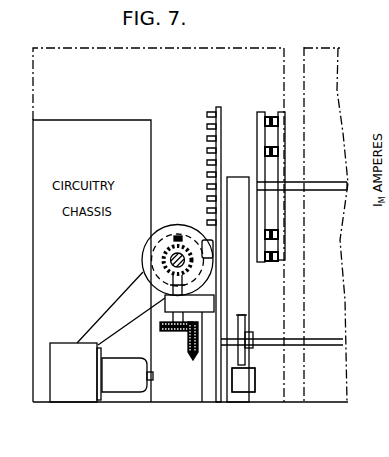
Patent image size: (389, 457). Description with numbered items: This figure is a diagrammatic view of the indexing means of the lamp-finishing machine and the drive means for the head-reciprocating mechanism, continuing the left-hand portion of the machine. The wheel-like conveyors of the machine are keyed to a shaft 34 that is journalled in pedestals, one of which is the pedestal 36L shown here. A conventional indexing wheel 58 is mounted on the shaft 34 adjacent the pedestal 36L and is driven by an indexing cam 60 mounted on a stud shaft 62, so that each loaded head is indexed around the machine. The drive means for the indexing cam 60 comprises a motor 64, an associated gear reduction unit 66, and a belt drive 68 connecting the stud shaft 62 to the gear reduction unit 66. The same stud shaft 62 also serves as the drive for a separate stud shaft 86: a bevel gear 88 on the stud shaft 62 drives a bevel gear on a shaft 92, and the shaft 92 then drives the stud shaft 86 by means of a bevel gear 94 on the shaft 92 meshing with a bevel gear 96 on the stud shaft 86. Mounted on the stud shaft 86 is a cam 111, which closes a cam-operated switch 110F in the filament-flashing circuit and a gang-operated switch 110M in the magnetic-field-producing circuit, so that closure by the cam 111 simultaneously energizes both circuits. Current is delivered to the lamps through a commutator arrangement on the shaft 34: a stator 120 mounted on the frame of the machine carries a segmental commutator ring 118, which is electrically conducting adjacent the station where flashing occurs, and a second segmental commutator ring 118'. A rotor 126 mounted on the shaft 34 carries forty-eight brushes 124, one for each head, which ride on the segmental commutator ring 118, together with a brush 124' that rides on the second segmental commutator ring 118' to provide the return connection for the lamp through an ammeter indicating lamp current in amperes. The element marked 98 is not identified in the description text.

The indexing wheel 58 is at (218, 106).
The rotor 126 is at (260, 111).
The stator 120 is at (282, 111).
The brushes 124 is at (280, 185).
The brush 124' is at (256, 204).
The segmental commutator ring 118 is at (302, 185).
The second segmental commutator ring 118' is at (306, 195).
The pedestal 36L is at (238, 180).
The shaft 34 is at (322, 182).
The indexing cam 60 is at (176, 224).
The bevel gear 88 is at (167, 247).
The stud shaft 62 is at (170, 260).
The drum 98 is at (162, 277).
The belt drive 68 is at (108, 308).
The shaft 92 is at (160, 307).
The gear reduction unit 66 is at (63, 345).
The motor 64 is at (122, 363).
The bevel gear 94 is at (174, 334).
The bevel gear 96 is at (190, 355).
The cam 111 is at (246, 323).
The stud shaft 86 is at (328, 341).
The switch 110M is at (248, 379).
The cam-operated switch 110F is at (262, 385).